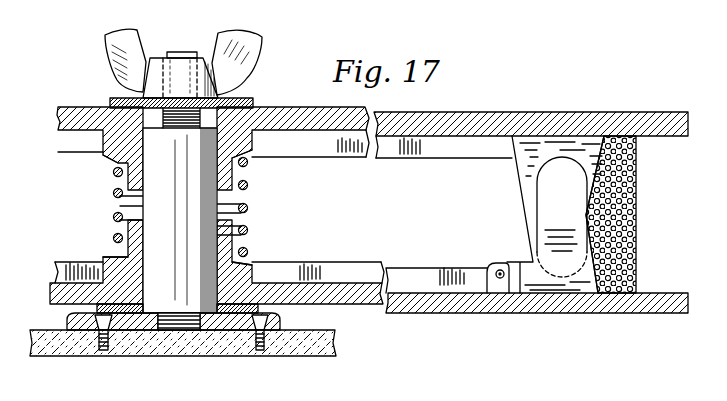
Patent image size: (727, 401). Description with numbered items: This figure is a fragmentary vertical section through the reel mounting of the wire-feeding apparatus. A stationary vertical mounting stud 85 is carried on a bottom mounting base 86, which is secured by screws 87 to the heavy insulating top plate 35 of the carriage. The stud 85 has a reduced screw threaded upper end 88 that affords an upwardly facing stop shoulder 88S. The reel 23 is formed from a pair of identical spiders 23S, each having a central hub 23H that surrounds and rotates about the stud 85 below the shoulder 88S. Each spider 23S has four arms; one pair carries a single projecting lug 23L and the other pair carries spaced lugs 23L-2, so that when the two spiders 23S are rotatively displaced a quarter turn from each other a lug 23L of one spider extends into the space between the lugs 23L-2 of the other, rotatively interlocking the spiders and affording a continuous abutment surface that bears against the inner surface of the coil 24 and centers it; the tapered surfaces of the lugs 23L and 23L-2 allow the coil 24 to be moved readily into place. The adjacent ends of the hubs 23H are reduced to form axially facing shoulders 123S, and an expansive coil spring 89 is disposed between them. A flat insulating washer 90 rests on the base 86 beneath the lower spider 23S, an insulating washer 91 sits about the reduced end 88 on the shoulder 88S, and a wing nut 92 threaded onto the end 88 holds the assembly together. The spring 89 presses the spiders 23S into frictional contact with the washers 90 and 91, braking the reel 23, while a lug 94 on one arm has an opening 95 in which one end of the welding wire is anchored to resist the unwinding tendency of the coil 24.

The reel 23 is at (76, 95).
The spider 23S is at (68, 268).
The central hub 23H is at (257, 152).
The projecting lug 23L is at (523, 172).
The spaced lugs 23L-2 is at (550, 220).
The coil 24 is at (642, 208).
The top plate 35 is at (160, 345).
The mounting stud 85 is at (163, 207).
The mounting base 86 is at (280, 323).
The screws 87 is at (100, 350).
The screw threaded upper end 88 is at (183, 52).
The stop shoulder 88S is at (155, 128).
The coil spring 89 is at (230, 203).
The insulating washer 90 is at (97, 307).
The insulating washer 91 is at (250, 100).
The wing nut 92 is at (238, 48).
The lug 94 is at (495, 265).
The opening 95 is at (500, 280).
The axially facing shoulders 123S is at (113, 162).